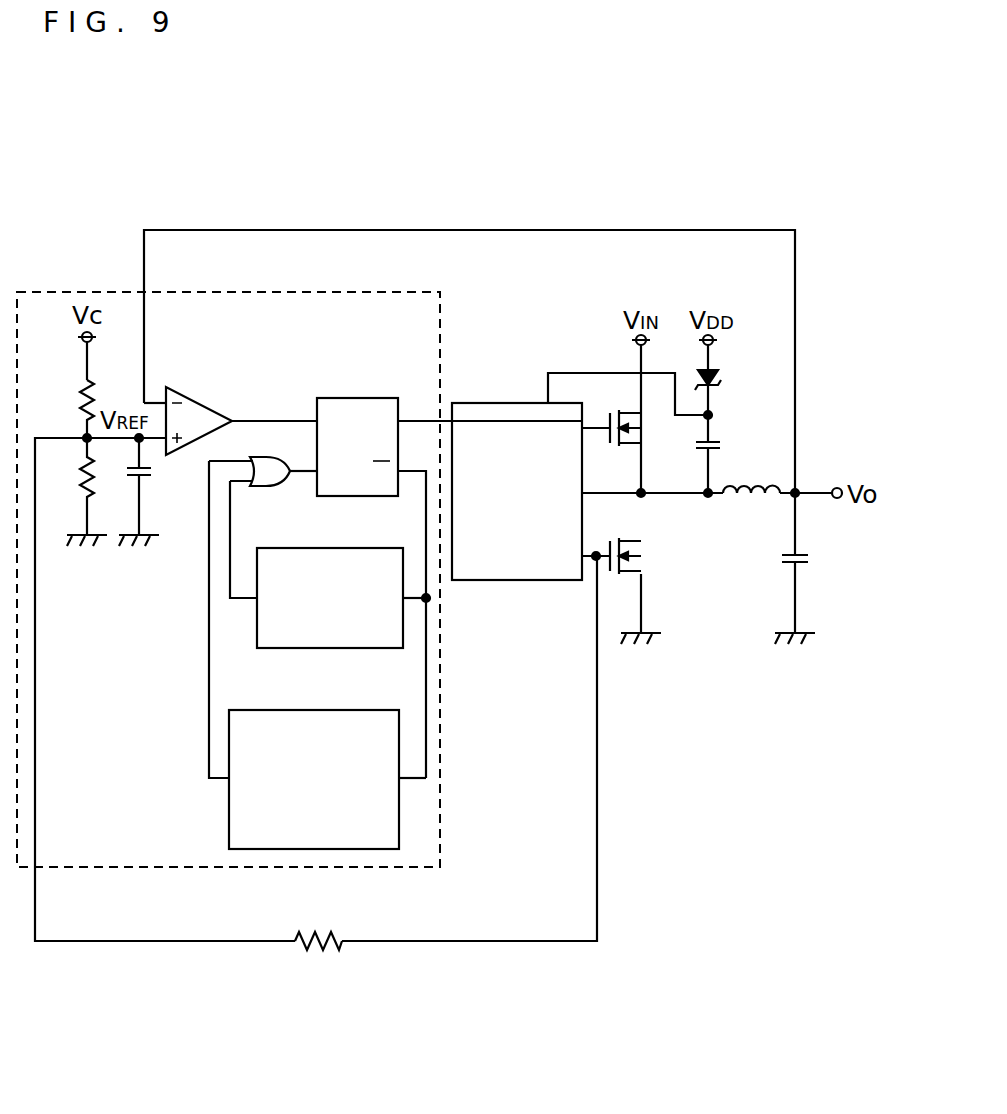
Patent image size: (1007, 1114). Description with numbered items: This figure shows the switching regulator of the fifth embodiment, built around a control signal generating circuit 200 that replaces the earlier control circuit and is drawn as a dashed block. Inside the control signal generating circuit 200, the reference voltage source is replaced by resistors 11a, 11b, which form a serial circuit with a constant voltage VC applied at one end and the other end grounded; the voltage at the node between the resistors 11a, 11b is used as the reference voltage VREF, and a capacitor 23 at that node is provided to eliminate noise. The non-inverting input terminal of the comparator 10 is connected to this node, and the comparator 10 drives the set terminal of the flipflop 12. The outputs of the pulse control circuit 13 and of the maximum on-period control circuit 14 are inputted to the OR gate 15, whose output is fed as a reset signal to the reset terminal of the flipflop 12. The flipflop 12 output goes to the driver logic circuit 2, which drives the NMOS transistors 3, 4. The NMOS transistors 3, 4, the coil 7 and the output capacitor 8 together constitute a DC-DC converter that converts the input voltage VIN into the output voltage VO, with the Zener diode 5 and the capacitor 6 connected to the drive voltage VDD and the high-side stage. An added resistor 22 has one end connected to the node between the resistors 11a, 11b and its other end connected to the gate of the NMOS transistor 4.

The control signal generating circuit 200 is at (258, 292).
The comparator 10 is at (195, 398).
The resistor 11a is at (77, 381).
The resistor 11b is at (72, 472).
The capacitor 23 is at (155, 473).
The flipflop 12 is at (358, 398).
The pulse control circuit 13 is at (331, 548).
The maximum on-period control circuit 14 is at (313, 710).
The OR gate 15 is at (263, 488).
The driver logic circuit 2 is at (521, 403).
The NMOS transistor 3 is at (650, 428).
The NMOS transistor 4 is at (652, 557).
The Zener diode 5 is at (723, 389).
The capacitor 6 is at (730, 446).
The coil 7 is at (753, 501).
The output capacitor 8 is at (832, 538).
The resistor 22 is at (321, 931).